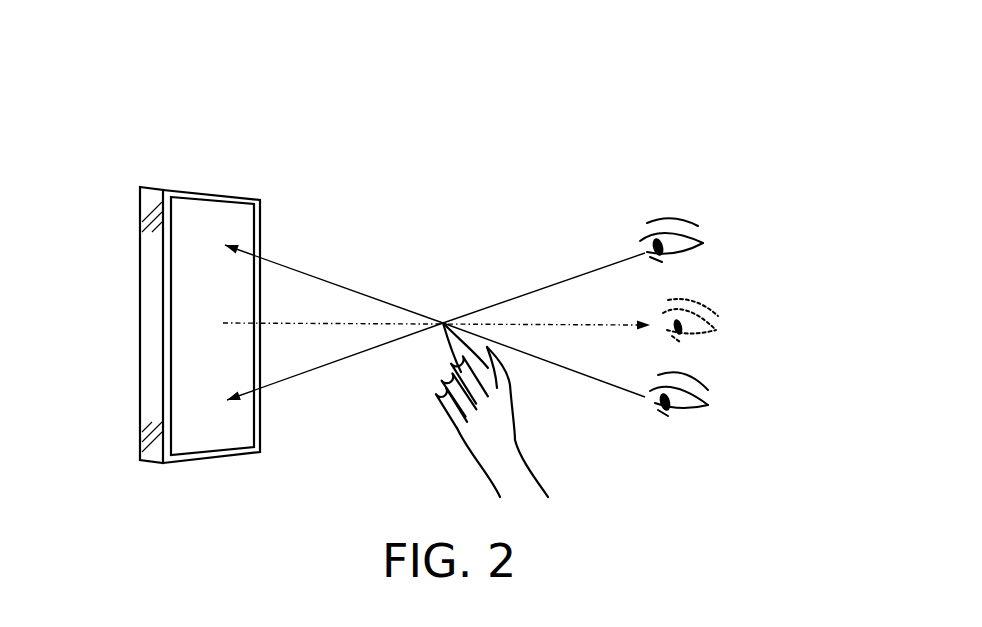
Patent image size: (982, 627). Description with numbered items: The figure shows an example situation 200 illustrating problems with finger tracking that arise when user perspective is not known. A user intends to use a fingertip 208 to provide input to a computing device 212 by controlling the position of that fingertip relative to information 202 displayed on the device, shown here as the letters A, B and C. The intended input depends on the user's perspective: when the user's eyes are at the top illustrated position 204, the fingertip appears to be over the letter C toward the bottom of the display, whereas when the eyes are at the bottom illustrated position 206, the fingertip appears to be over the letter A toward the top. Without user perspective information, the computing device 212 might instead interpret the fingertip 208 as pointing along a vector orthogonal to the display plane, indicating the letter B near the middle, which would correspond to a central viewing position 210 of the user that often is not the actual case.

The example situation 200 is at (797, 90).
The displayed information 202 is at (207, 218).
The top illustrated eye position 204 is at (717, 235).
The bottom illustrated eye position 206 is at (727, 387).
The fingertip 208 is at (438, 297).
The central viewing position 210 is at (737, 317).
The computing device 212 is at (139, 341).